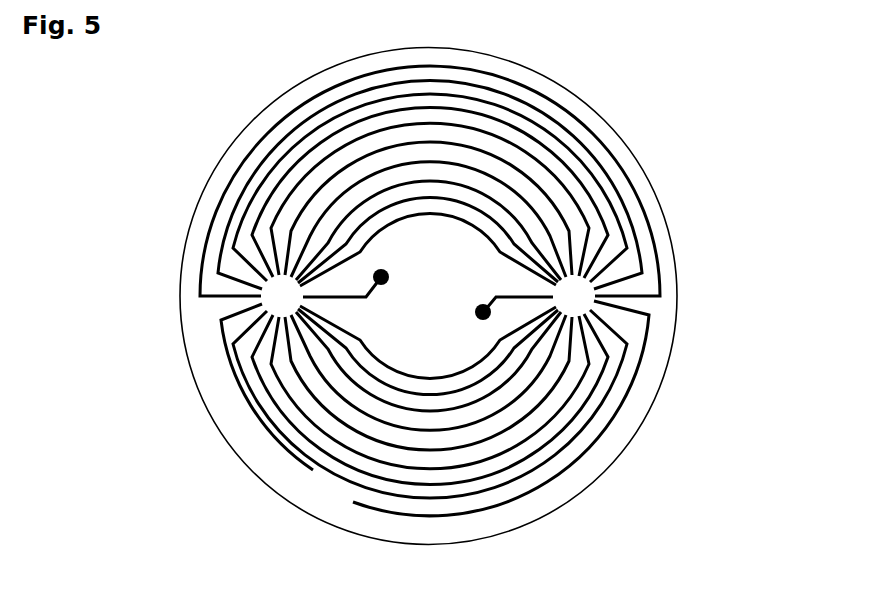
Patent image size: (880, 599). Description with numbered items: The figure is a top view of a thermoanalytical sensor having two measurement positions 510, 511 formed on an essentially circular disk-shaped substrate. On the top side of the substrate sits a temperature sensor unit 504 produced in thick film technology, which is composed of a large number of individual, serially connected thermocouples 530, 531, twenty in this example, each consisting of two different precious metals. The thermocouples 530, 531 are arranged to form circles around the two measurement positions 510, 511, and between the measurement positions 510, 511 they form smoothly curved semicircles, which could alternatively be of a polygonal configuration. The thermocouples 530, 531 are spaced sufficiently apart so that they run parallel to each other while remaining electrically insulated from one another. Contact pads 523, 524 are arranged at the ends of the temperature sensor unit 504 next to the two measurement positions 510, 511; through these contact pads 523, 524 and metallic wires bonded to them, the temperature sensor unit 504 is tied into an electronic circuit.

The temperature sensor unit 504 is at (604, 440).
The measurement position 510 is at (294, 297).
The measurement position 511 is at (582, 298).
The contact pad 523 is at (385, 274).
The contact pad 524 is at (510, 297).
The thermocouple 530 is at (355, 501).
The thermocouple 531 is at (313, 469).